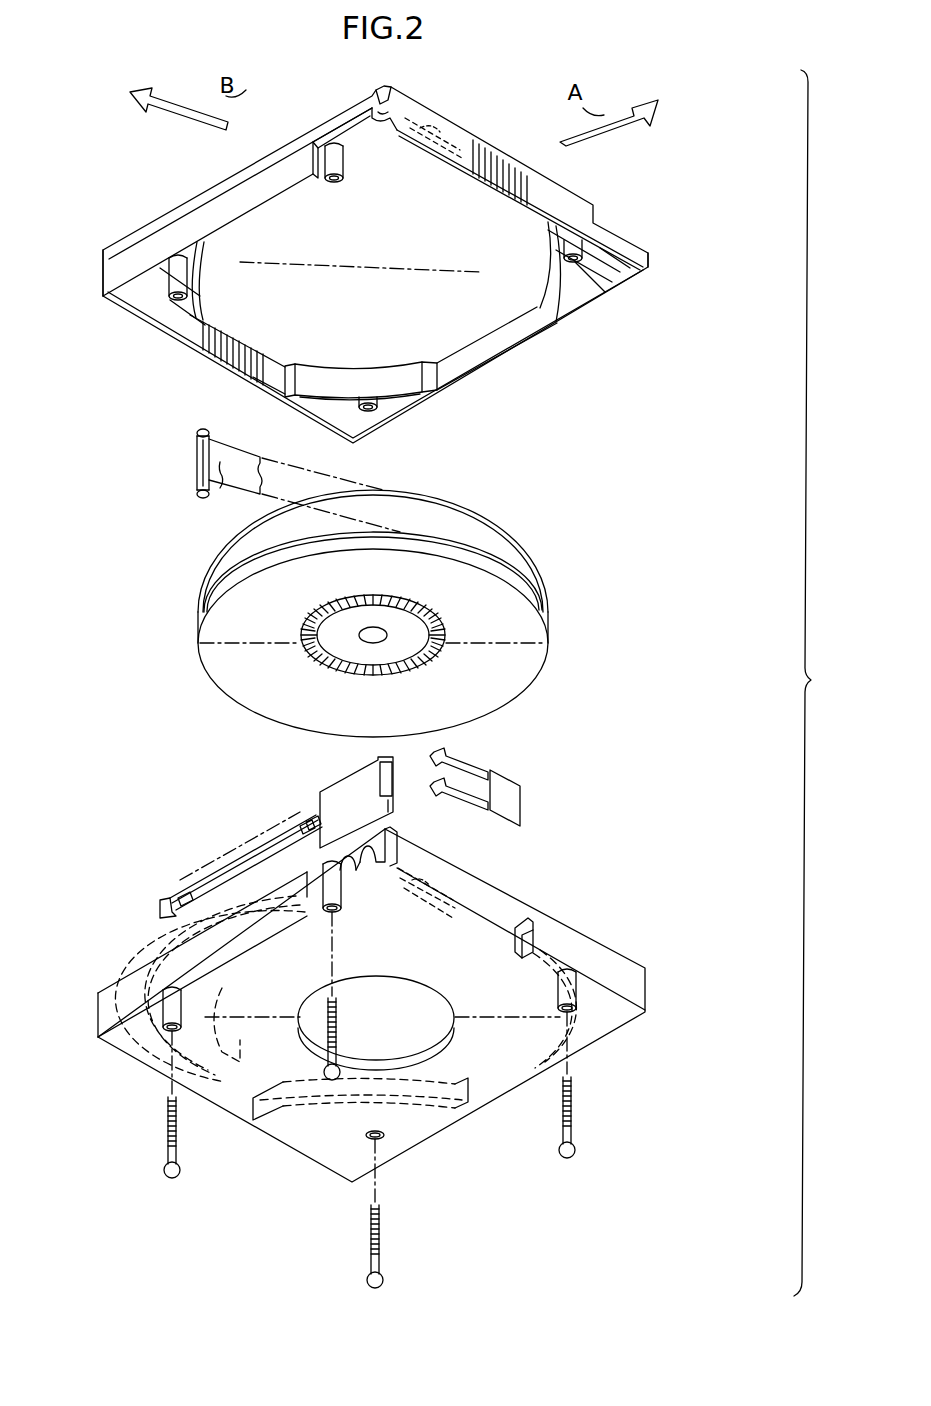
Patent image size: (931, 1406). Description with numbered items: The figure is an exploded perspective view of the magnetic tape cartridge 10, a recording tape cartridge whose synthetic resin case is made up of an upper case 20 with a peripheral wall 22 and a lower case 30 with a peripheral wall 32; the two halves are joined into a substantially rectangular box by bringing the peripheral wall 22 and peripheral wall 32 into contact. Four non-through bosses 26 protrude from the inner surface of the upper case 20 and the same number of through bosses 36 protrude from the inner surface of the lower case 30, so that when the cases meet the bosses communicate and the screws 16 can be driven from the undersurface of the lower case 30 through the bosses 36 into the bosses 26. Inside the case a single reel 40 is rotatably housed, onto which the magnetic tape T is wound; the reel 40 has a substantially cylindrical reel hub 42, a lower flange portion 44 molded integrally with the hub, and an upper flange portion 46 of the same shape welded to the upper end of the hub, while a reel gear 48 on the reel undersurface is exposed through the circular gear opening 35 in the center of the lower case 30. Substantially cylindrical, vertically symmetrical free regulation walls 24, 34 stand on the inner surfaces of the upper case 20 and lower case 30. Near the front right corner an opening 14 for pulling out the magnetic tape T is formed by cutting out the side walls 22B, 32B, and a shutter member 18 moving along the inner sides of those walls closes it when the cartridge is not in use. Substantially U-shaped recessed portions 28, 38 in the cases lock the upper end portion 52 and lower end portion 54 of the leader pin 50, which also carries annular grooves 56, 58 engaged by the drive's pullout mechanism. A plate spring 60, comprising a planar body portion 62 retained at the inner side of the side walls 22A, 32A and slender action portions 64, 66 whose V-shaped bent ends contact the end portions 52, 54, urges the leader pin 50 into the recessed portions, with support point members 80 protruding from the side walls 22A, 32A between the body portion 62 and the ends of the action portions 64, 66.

The magnetic tape cartridge 10 is at (660, 140).
The opening 14 is at (312, 150).
The screws 16 is at (326, 1076).
The shutter member 18 is at (338, 800).
The upper case 20 is at (600, 206).
The peripheral wall 22 is at (104, 262).
The side wall 22A is at (468, 150).
The side wall 22B is at (198, 214).
The free regulation wall 24 is at (356, 376).
The non-through bosses 26 is at (346, 170).
The recessed portion 28 is at (372, 96).
The lower case 30 is at (650, 985).
The peripheral wall 32 is at (98, 1016).
The side wall 32A is at (572, 944).
The side wall 32B is at (186, 960).
The free regulation wall 34 is at (432, 1120).
The gear opening 35 is at (406, 988).
The through bosses 36 is at (340, 912).
The recessed portion 38 is at (354, 876).
The reel 40 is at (566, 556).
The reel hub 42 is at (340, 660).
The lower flange portion 44 is at (528, 676).
The upper flange portion 46 is at (494, 524).
The reel gear 48 is at (430, 660).
The leader pin 50 is at (196, 462).
The upper end portion 52 is at (204, 430).
The lower end portion 54 is at (202, 496).
The annular groove 56 is at (198, 436).
The annular groove 58 is at (198, 492).
The magnetic tape T is at (230, 486).
The plate spring 60 is at (542, 800).
The body portion 62 is at (510, 790).
The action portion 64 is at (470, 764).
The action portion 66 is at (462, 808).
The support point members 80 is at (442, 130).